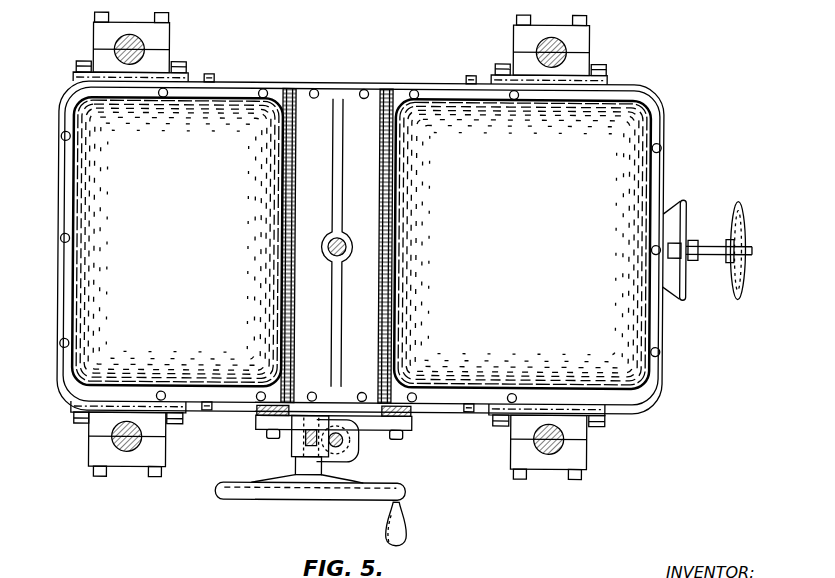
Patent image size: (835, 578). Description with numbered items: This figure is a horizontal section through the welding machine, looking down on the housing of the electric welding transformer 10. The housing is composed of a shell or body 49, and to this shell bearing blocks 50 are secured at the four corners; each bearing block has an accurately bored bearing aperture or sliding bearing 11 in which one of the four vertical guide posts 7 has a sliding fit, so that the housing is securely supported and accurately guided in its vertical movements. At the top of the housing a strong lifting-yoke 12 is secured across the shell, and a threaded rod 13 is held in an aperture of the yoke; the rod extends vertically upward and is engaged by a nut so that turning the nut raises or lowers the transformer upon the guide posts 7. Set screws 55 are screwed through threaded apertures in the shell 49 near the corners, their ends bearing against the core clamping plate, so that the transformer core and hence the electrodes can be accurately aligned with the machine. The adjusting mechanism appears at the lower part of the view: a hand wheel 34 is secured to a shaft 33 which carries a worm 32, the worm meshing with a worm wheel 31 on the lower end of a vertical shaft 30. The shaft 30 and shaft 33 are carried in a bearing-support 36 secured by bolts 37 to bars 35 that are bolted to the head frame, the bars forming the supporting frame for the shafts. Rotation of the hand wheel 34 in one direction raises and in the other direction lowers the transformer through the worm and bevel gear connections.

The guide post 7 is at (114, 46).
The electric welding transformer 10 is at (648, 372).
The sliding bearing 11 is at (160, 38).
The lifting-yoke 12 is at (370, 216).
The threaded rod 13 is at (330, 240).
The vertical shaft 30 is at (352, 436).
The worm wheel 31 is at (346, 454).
The worm 32 is at (306, 440).
The shaft 33 is at (296, 456).
The hand wheel 34 is at (272, 500).
The bar 35 is at (258, 412).
The bearing-support 36 is at (412, 432).
The bolt 37 is at (264, 432).
The shell 49 is at (60, 394).
The bearing block 50 is at (190, 76).
The set screw 55 is at (214, 76).